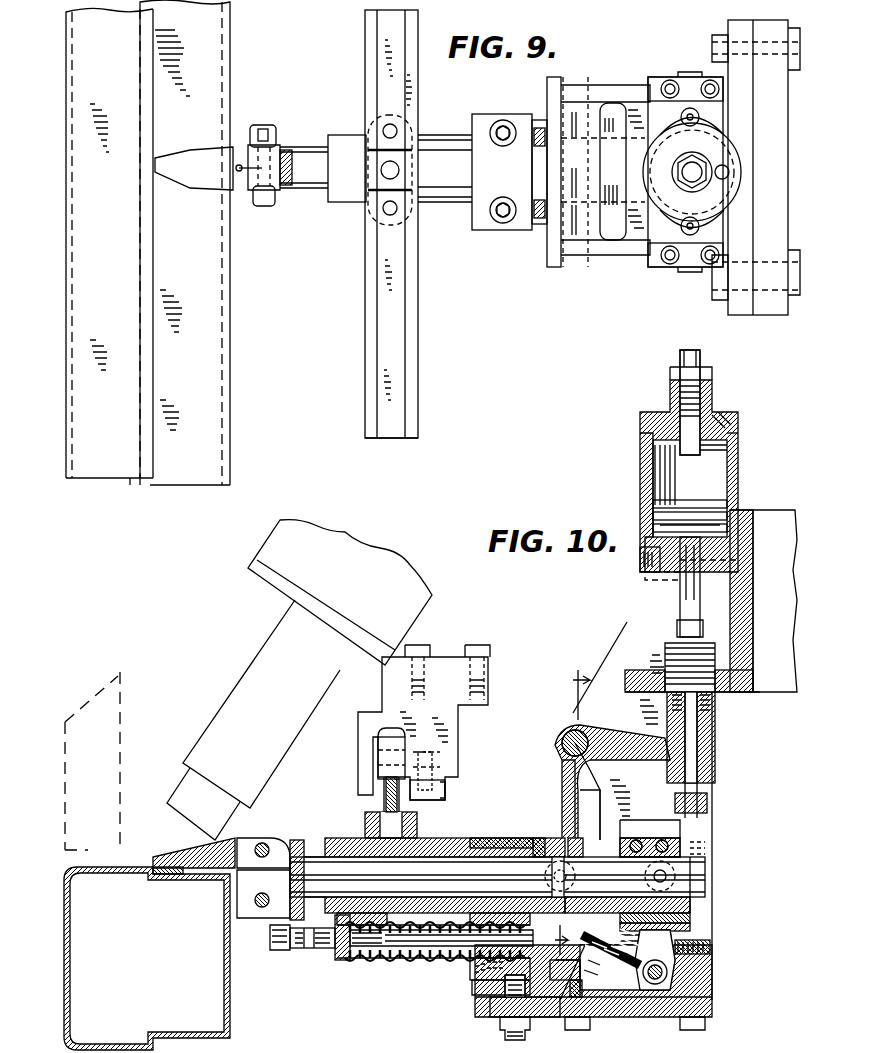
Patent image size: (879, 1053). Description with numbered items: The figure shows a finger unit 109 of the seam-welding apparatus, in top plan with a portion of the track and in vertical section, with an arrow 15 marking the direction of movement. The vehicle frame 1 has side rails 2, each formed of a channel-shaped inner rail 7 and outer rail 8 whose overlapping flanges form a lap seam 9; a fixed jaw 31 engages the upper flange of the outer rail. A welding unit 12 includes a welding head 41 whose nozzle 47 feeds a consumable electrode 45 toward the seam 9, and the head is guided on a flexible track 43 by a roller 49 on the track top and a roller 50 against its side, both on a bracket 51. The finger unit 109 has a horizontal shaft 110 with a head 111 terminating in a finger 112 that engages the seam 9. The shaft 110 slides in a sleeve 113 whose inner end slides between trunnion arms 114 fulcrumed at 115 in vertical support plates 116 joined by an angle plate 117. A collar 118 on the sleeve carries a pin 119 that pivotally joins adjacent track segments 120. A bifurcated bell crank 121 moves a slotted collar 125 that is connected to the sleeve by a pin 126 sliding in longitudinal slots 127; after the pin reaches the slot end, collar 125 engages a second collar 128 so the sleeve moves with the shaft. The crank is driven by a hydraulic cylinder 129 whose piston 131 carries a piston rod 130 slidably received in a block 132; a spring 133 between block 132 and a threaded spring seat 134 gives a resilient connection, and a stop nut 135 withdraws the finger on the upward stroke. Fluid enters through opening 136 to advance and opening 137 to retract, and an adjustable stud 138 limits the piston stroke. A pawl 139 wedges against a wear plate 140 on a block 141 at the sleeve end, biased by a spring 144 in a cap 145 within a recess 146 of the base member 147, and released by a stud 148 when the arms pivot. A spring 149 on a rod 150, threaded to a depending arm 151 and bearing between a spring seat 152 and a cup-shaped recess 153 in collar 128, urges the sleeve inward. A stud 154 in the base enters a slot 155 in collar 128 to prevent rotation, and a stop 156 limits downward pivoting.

In FIG. 9, the vehicle frame 1 is at (241, 266).
In FIG. 9, the side rail 2 is at (239, 380).
In FIG. 10, the side rail 2 is at (242, 1016).
In FIG. 9, the inner rail 7 is at (230, 304).
In FIG. 10, the inner rail 7 is at (232, 983).
In FIG. 9, the outer rail 8 is at (66, 313).
In FIG. 10, the outer rail 8 is at (66, 963).
In FIG. 9, the lap seam 9 is at (132, 472).
In FIG. 10, the lap seam 9 is at (150, 878).
In FIG. 10, the welding unit 12 is at (354, 542).
In FIG. 10, the direction of movement 15 is at (565, 805).
In FIG. 10, the fixed jaw 31 is at (118, 758).
In FIG. 10, the welding head 41 is at (268, 538).
In FIG. 9, the flexible track 43 is at (366, 320).
In FIG. 10, the flexible track 43 is at (378, 810).
In FIG. 10, the consumable electrode 45 is at (174, 818).
In FIG. 10, the nozzle 47 is at (232, 694).
In FIG. 10, the roller 49 is at (378, 737).
In FIG. 10, the roller 50 is at (447, 792).
In FIG. 10, the bracket 51 is at (458, 728).
In FIG. 9, the finger unit 109 is at (530, 245).
In FIG. 10, the finger unit 109 is at (305, 830).
In FIG. 10, the shaft 110 is at (314, 855).
In FIG. 9, the head 111 is at (248, 142).
In FIG. 10, the head 111 is at (258, 838).
In FIG. 9, the finger 112 is at (185, 180).
In FIG. 10, the finger 112 is at (175, 855).
In FIG. 9, the sleeve 113 is at (448, 206).
In FIG. 10, the sleeve 113 is at (437, 855).
In FIG. 10, the trunnion arm 114 is at (692, 898).
In FIG. 10, the fulcrum 115 is at (700, 860).
In FIG. 9, the vertical support plate 116 is at (622, 92).
In FIG. 10, the vertical support plate 116 is at (695, 900).
In FIG. 9, the angle plate 117 is at (778, 80).
In FIG. 10, the angle plate 117 is at (780, 520).
In FIG. 9, the collar 118 is at (377, 128).
In FIG. 10, the collar 118 is at (370, 850).
In FIG. 9, the pin 119 is at (400, 170).
In FIG. 10, the pin 119 is at (375, 786).
In FIG. 9, the track segment 120 is at (366, 52).
In FIG. 9, the bell crank 121 is at (545, 186).
In FIG. 10, the bell crank 121 is at (556, 785).
In FIG. 10, the collar 125 is at (540, 838).
In FIG. 10, the pin 126 is at (562, 860).
In FIG. 10, the longitudinal slot 127 is at (596, 843).
In FIG. 10, the second collar 128 is at (487, 848).
In FIG. 9, the hydraulic cylinder 129 is at (735, 185).
In FIG. 10, the hydraulic cylinder 129 is at (732, 452).
In FIG. 10, the piston rod 130 is at (680, 585).
In FIG. 10, the piston 131 is at (699, 492).
In FIG. 10, the block 132 is at (716, 739).
In FIG. 10, the spring 133 is at (716, 700).
In FIG. 10, the spring seat 134 is at (664, 647).
In FIG. 10, the stop nut 135 is at (708, 803).
In FIG. 9, the opening 136 is at (728, 170).
In FIG. 10, the opening 136 is at (732, 408).
In FIG. 10, the opening 137 is at (640, 565).
In FIG. 9, the stud 138 is at (691, 166).
In FIG. 10, the stud 138 is at (732, 462).
In FIG. 10, the pawl 139 is at (697, 965).
In FIG. 10, the wear plate 140 is at (692, 928).
In FIG. 10, the block 141 is at (692, 916).
In FIG. 10, the spring 144 is at (597, 993).
In FIG. 10, the cap 145 is at (614, 944).
In FIG. 10, the recess 146 is at (560, 1017).
In FIG. 10, the base member 147 is at (654, 1018).
In FIG. 10, the stud 148 is at (712, 948).
In FIG. 10, the spring 149 is at (410, 962).
In FIG. 10, the rod 150 is at (316, 950).
In FIG. 10, the depending arm 151 is at (276, 950).
In FIG. 10, the spring seat 152 is at (340, 962).
In FIG. 10, the cup-shaped recess 153 is at (472, 960).
In FIG. 10, the stud 154 is at (505, 1037).
In FIG. 10, the slot 155 is at (480, 982).
In FIG. 10, the stop 156 is at (566, 992).